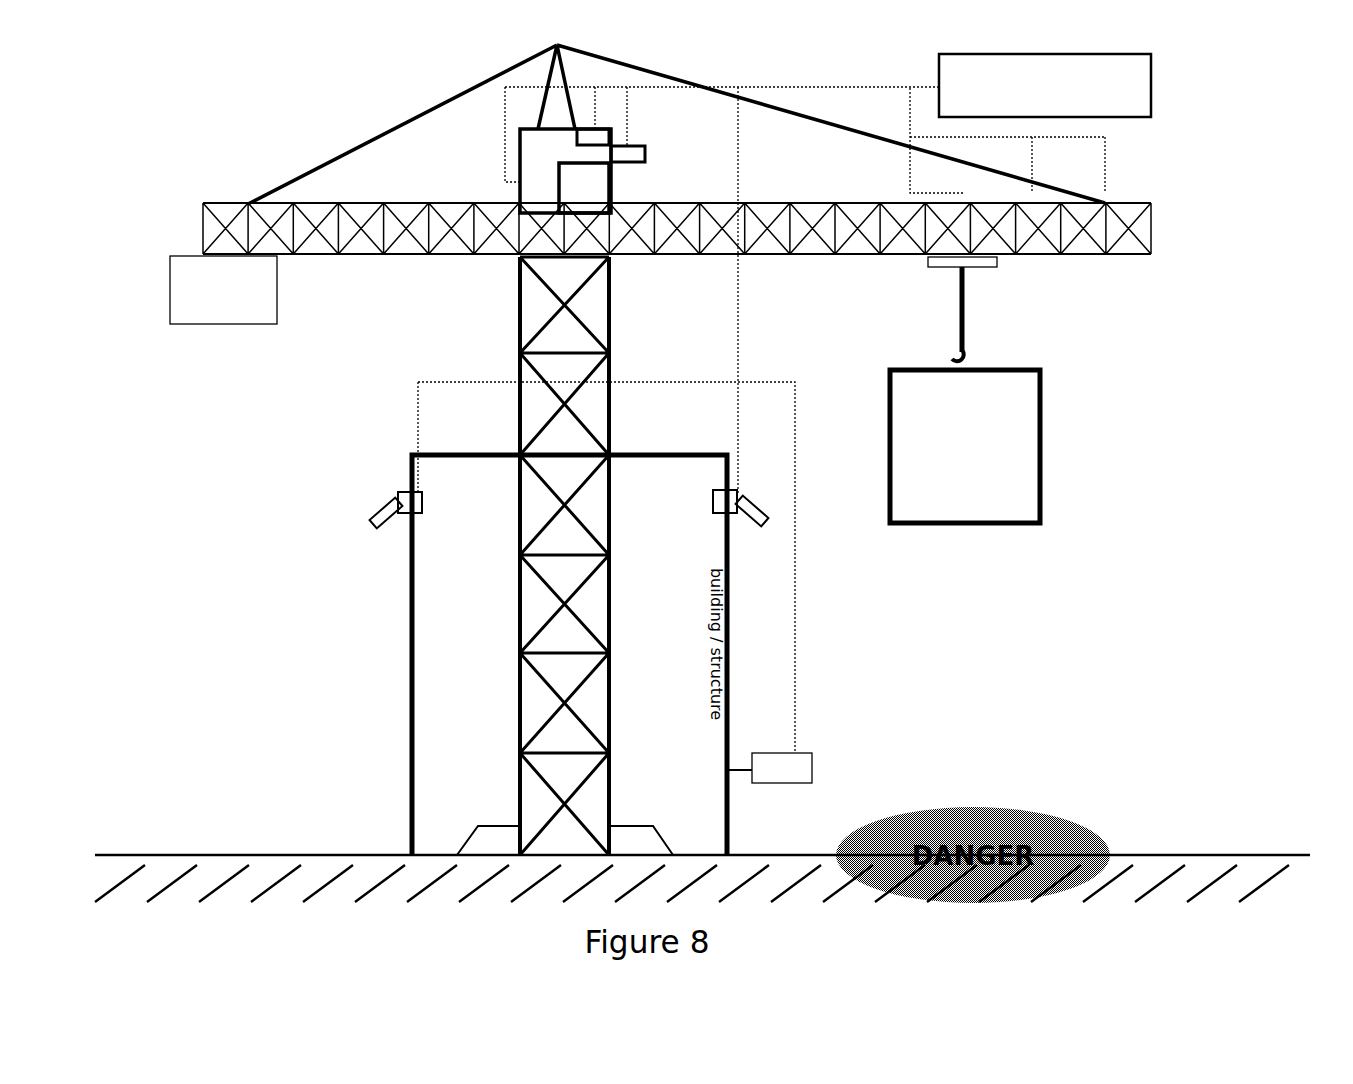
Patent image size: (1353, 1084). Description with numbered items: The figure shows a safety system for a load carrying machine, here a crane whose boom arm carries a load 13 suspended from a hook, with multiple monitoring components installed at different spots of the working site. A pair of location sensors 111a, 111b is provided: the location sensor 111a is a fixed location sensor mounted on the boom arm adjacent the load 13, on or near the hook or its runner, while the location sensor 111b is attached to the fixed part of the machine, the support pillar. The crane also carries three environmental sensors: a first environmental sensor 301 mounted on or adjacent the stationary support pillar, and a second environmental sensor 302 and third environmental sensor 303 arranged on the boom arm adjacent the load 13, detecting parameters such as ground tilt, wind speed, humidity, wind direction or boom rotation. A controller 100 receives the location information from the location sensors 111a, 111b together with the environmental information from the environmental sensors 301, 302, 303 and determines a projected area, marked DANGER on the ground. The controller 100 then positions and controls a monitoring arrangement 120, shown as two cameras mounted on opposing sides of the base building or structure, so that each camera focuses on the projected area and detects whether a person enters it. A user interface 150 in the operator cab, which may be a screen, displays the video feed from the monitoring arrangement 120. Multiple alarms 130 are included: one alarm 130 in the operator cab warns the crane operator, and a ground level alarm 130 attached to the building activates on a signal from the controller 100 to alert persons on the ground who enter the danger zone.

The controller 100 is at (1151, 103).
The user interface 150 is at (611, 132).
The alarm 130 is at (645, 163).
The monitoring arrangement 120 is at (383, 490).
The load 13 is at (1040, 442).
The location sensor 111a is at (963, 200).
The location sensor 111b is at (545, 180).
The first environmental sensor 301 is at (545, 155).
The second environmental sensor 302 is at (1033, 200).
The third environmental sensor 303 is at (1105, 200).